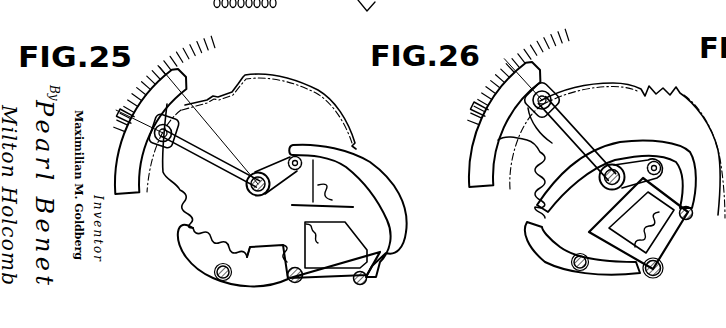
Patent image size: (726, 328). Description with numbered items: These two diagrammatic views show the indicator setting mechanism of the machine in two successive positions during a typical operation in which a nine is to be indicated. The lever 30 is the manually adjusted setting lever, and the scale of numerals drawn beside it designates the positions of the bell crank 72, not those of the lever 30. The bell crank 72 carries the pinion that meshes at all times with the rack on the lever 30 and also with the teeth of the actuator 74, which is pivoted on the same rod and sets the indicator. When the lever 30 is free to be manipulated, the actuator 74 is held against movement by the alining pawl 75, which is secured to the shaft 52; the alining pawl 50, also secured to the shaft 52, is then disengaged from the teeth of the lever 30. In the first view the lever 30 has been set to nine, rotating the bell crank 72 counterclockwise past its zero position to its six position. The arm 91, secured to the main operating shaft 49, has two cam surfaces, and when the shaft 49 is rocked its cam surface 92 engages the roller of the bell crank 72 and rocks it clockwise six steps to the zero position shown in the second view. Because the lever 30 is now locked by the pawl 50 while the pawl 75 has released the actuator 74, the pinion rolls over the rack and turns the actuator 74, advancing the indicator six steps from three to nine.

In FIG. 25, the lever 30 is at (121, 148).
In FIG. 26, the lever 30 is at (475, 146).
In FIG. 25, the actuator 74 is at (333, 111).
In FIG. 26, the actuator 74 is at (645, 95).
In FIG. 25, the bell crank 72 is at (207, 164).
In FIG. 26, the bell crank 72 is at (577, 131).
In FIG. 25, the cam surface 92 is at (357, 176).
In FIG. 26, the cam surface 92 is at (548, 189).
In FIG. 25, the main operating shaft 49 is at (307, 262).
In FIG. 26, the main operating shaft 49 is at (661, 268).
In FIG. 25, the arm 91 is at (373, 262).
In FIG. 26, the arm 91 is at (672, 242).
In FIG. 25, the alining pawl 75 is at (192, 251).
In FIG. 26, the alining pawl 75 is at (542, 248).
In FIG. 25, the alining pawl 50 is at (251, 261).
In FIG. 25, the shaft 52 is at (216, 275).
In FIG. 26, the shaft 52 is at (572, 269).